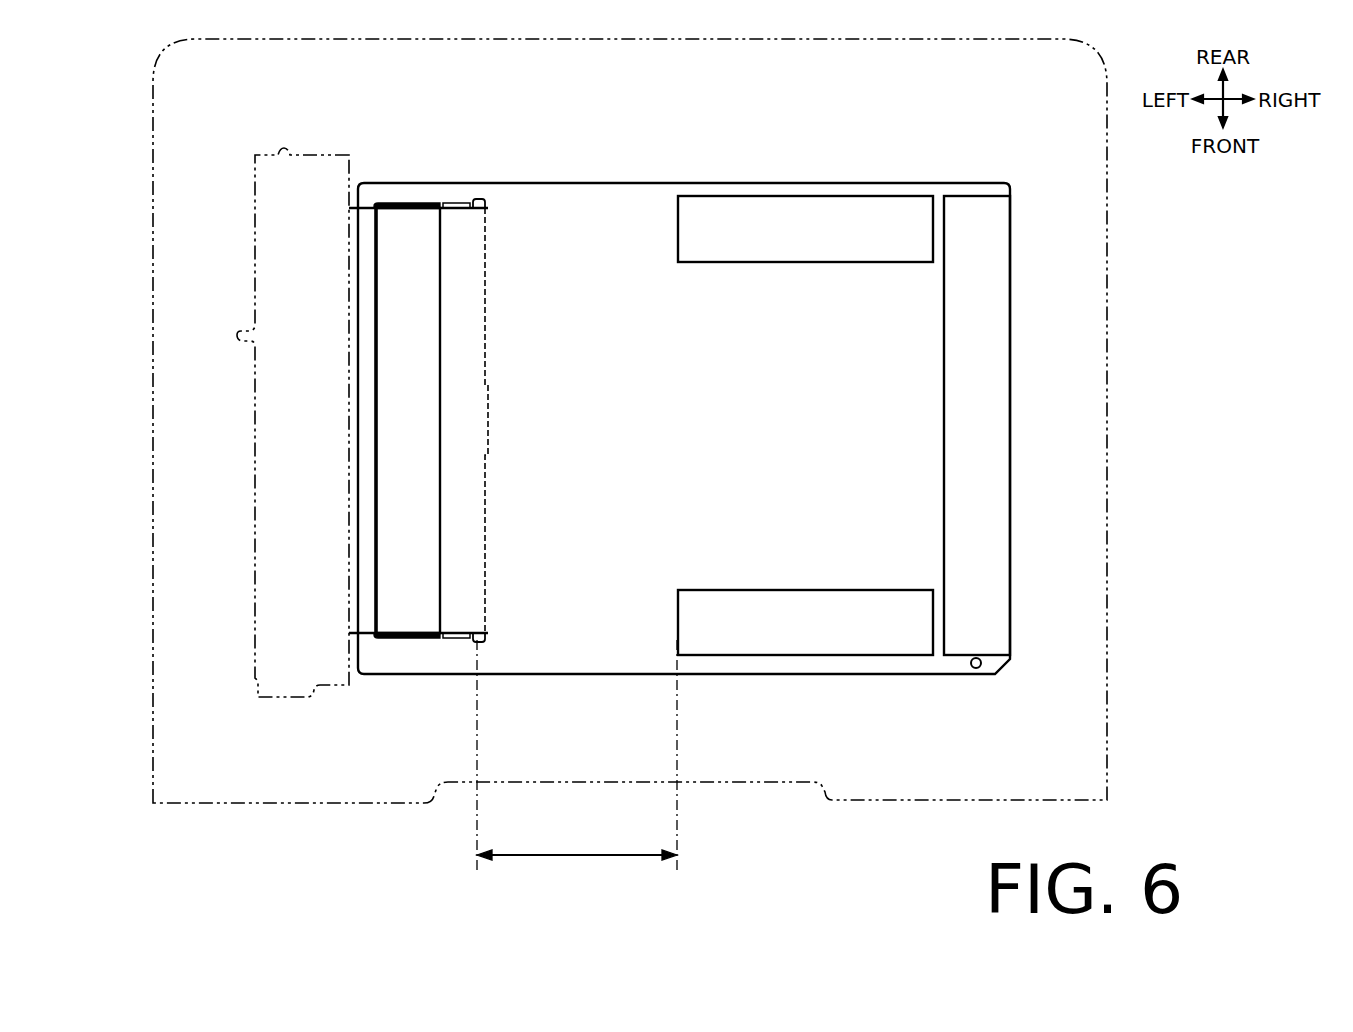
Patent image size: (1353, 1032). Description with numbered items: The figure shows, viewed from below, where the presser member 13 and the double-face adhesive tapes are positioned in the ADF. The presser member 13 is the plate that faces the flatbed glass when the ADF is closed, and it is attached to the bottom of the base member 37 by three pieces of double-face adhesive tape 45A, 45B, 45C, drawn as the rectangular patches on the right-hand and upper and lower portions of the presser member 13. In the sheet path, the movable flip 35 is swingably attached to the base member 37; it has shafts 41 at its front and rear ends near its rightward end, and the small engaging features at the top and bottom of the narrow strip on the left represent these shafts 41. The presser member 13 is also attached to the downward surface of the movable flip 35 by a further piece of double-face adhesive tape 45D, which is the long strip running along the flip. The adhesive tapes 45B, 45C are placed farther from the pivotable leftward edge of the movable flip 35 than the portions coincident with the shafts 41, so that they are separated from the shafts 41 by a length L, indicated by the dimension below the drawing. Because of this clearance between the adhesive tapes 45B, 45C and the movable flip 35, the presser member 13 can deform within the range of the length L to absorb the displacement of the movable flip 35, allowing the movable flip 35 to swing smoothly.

The presser member 13 is at (572, 183).
The movable flip 35 is at (349, 470).
The base member 37 is at (1110, 266).
The shafts 41 is at (478, 199).
The double-face adhesive tape 45A is at (944, 396).
The double-face adhesive tape 45B is at (762, 263).
The double-face adhesive tape 45C is at (762, 590).
The double-face adhesive tape 45D is at (440, 418).
The length L is at (577, 755).